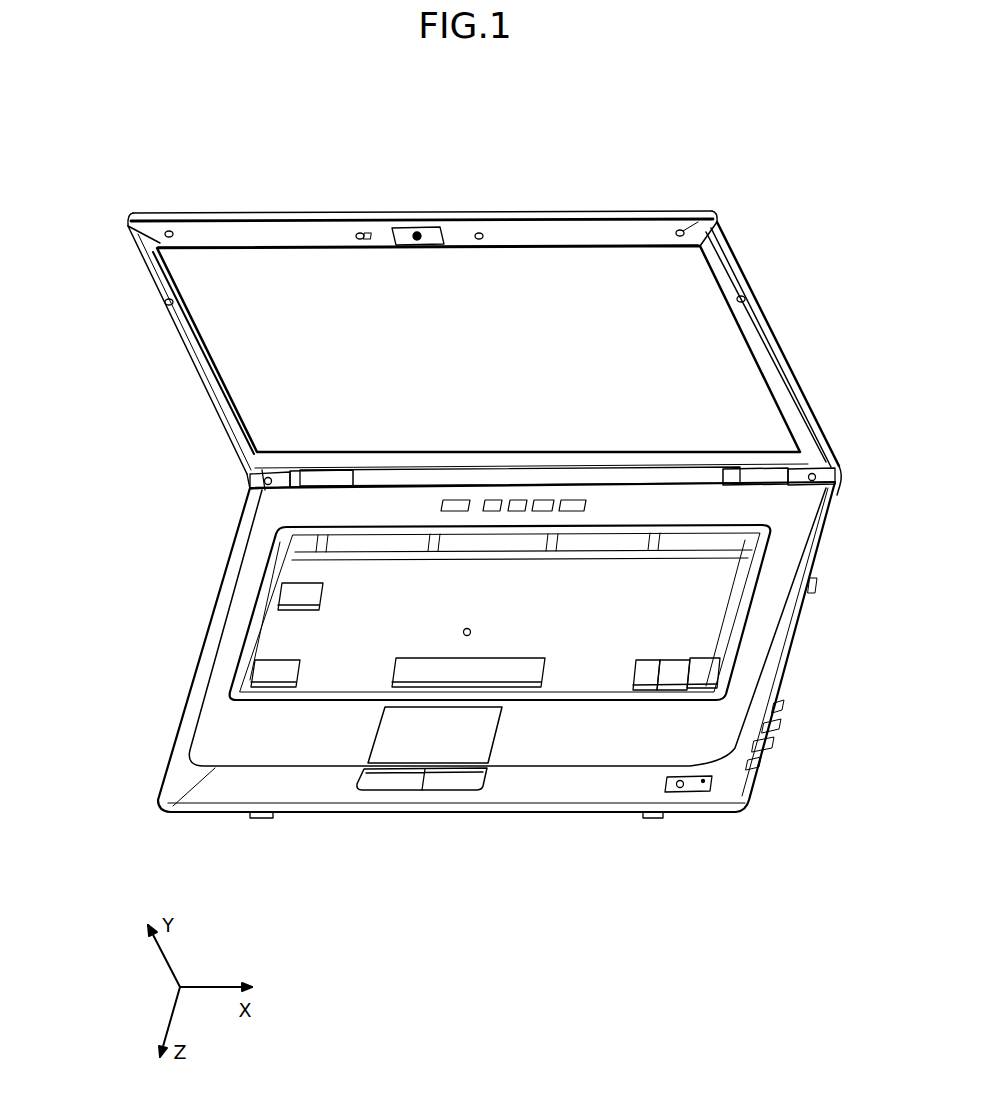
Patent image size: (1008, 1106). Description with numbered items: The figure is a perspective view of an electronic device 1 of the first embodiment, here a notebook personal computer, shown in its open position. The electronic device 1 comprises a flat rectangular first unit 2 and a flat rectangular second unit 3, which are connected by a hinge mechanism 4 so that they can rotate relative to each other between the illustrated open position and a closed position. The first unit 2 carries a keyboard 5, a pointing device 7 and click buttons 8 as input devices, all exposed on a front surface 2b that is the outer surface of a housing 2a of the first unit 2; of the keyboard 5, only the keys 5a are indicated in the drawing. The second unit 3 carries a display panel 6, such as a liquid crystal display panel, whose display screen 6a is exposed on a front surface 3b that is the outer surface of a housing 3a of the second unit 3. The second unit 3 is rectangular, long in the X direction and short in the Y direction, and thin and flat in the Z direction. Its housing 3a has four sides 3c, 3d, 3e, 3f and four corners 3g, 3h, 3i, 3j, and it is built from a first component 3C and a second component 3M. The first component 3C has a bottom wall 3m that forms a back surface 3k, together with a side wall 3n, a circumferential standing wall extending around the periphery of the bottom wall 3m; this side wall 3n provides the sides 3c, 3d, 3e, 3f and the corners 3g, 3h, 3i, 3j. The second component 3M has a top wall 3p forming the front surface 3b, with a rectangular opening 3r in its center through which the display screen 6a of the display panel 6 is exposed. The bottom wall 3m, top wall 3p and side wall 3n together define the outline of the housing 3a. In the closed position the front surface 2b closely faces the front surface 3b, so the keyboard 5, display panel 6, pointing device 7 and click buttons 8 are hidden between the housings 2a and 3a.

The electronic device 1 is at (713, 118).
The first unit 2 is at (206, 636).
The housing of the first unit 2a is at (507, 627).
The front surface of the first unit 2b is at (215, 717).
The second unit 3 is at (178, 352).
The housing of the second unit 3a is at (213, 213).
The front surface of the second unit 3b is at (158, 284).
The top wall 3p is at (187, 350).
The side of the housing 3c is at (602, 210).
The first component 3C is at (415, 214).
The side of the housing 3d is at (783, 360).
The side of the housing 3e is at (615, 483).
The side of the housing 3f is at (175, 330).
The corner of the housing 3g is at (135, 217).
The corner of the housing 3h is at (707, 213).
The corner of the housing 3i is at (838, 470).
The corner of the housing 3j is at (247, 481).
The back surface 3k is at (668, 213).
The bottom wall 3m is at (687, 229).
The second component 3M is at (200, 368).
The side wall 3n is at (750, 288).
The opening 3r is at (296, 253).
The hinge mechanism 4 is at (286, 475).
The keyboard 5 is at (727, 670).
The keys 5a is at (638, 683).
The display panel 6 is at (725, 345).
The display screen 6a is at (528, 262).
The pointing device 7 is at (388, 738).
The click buttons 8 is at (443, 777).